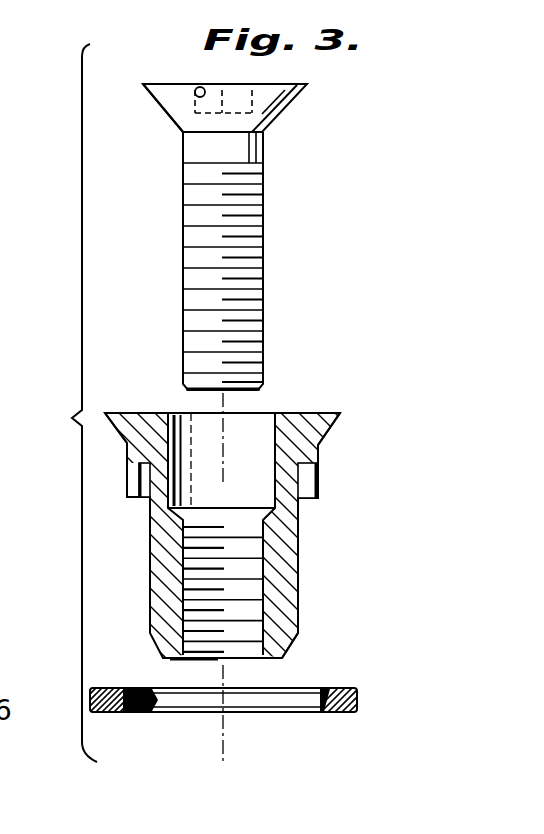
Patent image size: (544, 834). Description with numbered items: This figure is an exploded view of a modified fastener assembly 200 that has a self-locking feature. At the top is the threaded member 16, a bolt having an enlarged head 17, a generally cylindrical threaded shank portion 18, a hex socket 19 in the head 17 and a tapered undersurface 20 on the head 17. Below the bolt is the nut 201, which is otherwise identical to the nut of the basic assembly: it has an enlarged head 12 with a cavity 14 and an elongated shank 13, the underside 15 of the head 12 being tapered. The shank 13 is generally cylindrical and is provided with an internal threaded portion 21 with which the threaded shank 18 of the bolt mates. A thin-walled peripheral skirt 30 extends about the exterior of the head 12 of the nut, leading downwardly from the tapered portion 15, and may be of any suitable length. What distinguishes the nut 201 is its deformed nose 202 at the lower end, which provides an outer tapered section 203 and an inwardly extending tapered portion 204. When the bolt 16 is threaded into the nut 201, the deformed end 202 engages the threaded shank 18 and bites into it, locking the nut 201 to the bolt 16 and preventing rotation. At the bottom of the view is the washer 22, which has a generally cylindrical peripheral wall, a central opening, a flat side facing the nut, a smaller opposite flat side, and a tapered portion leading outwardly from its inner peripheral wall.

The fastener assembly 200 is at (49, 403).
The threaded member 16 is at (241, 210).
The enlarged head 17 is at (264, 108).
The threaded shank portion 18 is at (200, 273).
The hex socket 19 is at (198, 84).
The tapered undersurface 20 is at (162, 102).
The enlarged head 12 is at (272, 447).
The elongated shank 13 is at (163, 597).
The cavity 14 is at (184, 421).
The underside 15 is at (312, 424).
The internal threaded portion 21 is at (262, 527).
The thin-walled peripheral skirt 30 is at (139, 476).
The nut 201 is at (308, 568).
The deformed nose 202 is at (266, 660).
The outer tapered section 203 is at (300, 644).
The inwardly extending tapered portion 204 is at (205, 662).
The washer 22 is at (270, 720).